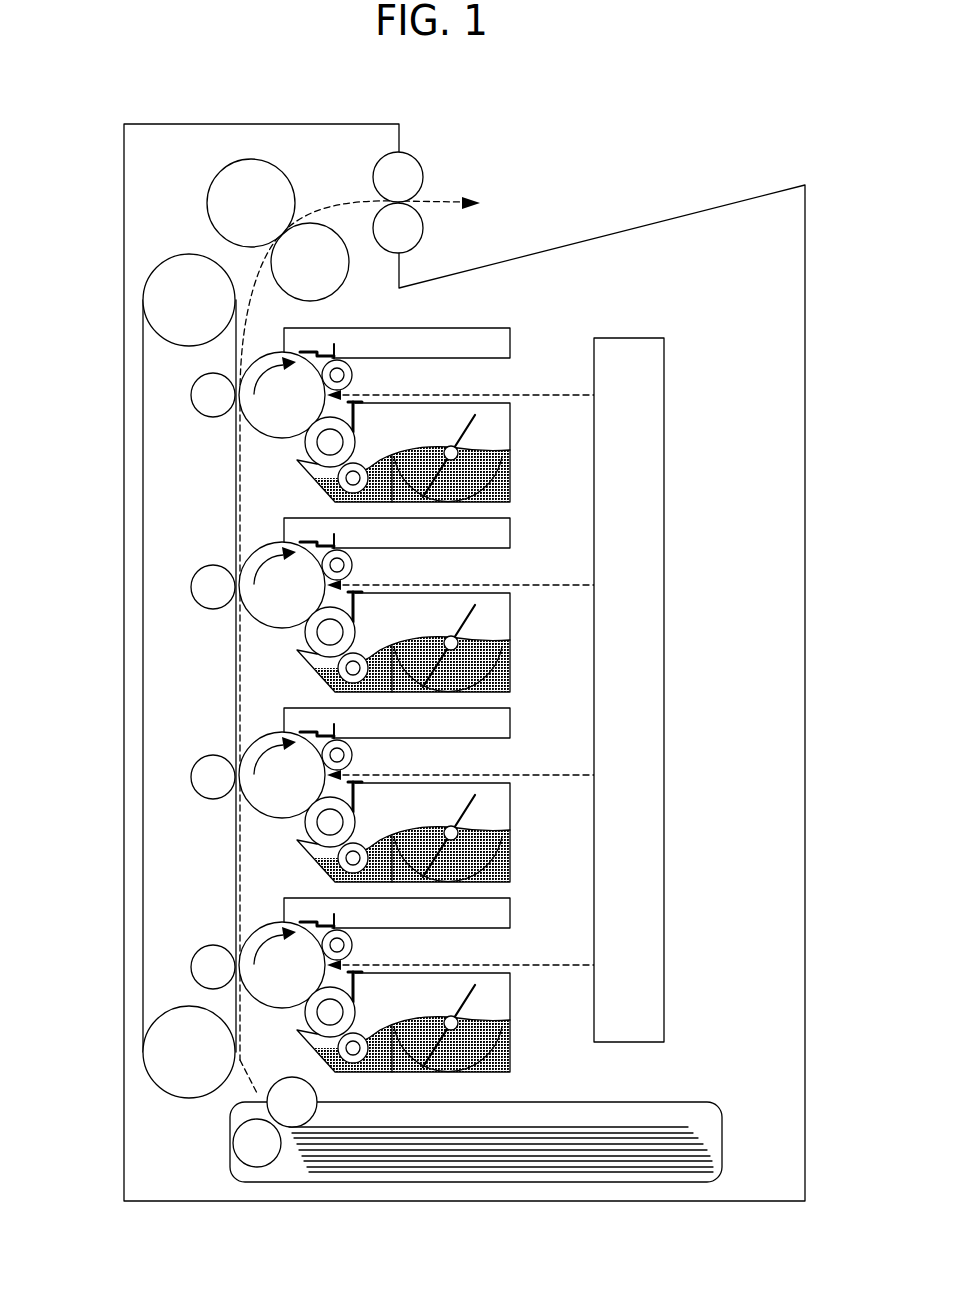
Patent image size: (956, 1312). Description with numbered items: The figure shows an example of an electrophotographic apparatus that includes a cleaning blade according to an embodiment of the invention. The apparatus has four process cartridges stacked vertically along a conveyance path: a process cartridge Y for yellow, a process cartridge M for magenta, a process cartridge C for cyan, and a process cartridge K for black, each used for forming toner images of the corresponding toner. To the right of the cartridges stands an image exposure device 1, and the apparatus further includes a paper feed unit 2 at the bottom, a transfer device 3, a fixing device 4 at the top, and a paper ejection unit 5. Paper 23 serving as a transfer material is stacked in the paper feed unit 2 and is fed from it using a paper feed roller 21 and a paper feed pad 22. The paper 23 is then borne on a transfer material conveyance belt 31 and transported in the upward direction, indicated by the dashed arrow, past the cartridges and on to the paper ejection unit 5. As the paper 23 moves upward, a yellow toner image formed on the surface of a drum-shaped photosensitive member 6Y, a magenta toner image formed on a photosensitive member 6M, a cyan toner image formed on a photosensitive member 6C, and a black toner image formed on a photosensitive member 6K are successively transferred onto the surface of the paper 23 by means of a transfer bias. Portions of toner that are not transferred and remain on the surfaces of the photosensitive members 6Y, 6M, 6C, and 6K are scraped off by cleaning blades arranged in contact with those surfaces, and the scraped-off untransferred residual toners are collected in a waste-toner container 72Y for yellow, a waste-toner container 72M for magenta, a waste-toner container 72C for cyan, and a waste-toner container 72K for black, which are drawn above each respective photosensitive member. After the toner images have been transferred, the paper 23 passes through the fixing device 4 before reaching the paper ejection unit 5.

The image exposure device 1 is at (655, 688).
The paper feed unit 2 is at (657, 1110).
The transfer device 3 is at (191, 583).
The fixing device 4 is at (215, 204).
The paper ejection unit 5 is at (414, 178).
The photosensitive member 6K is at (281, 427).
The photosensitive member 6C is at (281, 617).
The photosensitive member 6M is at (281, 807).
The photosensitive member 6Y is at (281, 997).
The waste-toner container 72K is at (511, 345).
The waste-toner container 72C is at (511, 535).
The waste-toner container 72M is at (511, 725).
The waste-toner container 72Y is at (511, 915).
The process cartridge K is at (511, 438).
The process cartridge C is at (511, 628).
The process cartridge M is at (511, 818).
The process cartridge Y is at (511, 1008).
The paper feed roller 21 is at (267, 1087).
The paper feed pad 22 is at (240, 1140).
The paper 23 is at (698, 1152).
The transfer material conveyance belt 31 is at (143, 828).